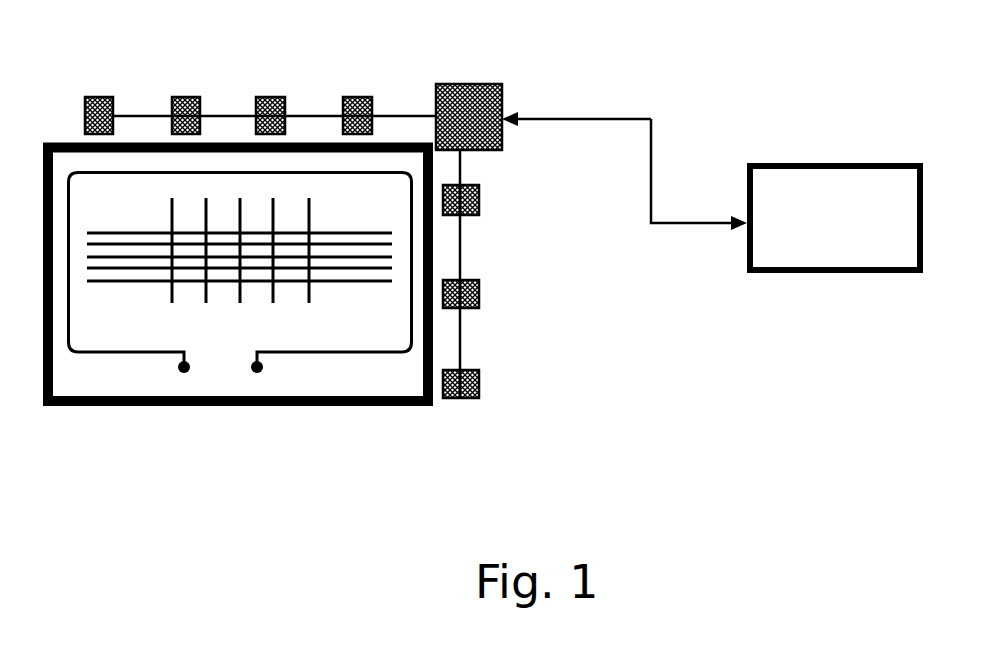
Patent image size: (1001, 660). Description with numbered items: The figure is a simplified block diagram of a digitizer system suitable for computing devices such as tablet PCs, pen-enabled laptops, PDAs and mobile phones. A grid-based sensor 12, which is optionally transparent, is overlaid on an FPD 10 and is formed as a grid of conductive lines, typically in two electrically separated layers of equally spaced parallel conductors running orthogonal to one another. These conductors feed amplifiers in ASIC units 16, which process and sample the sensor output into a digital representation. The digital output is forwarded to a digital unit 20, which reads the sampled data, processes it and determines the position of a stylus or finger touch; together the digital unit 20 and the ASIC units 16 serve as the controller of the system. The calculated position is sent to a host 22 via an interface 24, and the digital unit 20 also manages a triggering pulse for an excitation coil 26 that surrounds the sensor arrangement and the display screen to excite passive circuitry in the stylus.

The FPD 10 is at (52, 143).
The grid-based sensor 12 is at (311, 213).
The ASIC 16 is at (102, 97).
The digital unit 20 is at (482, 84).
The host 22 is at (812, 255).
The interface 24 is at (650, 188).
The excitation coil 26 is at (301, 353).